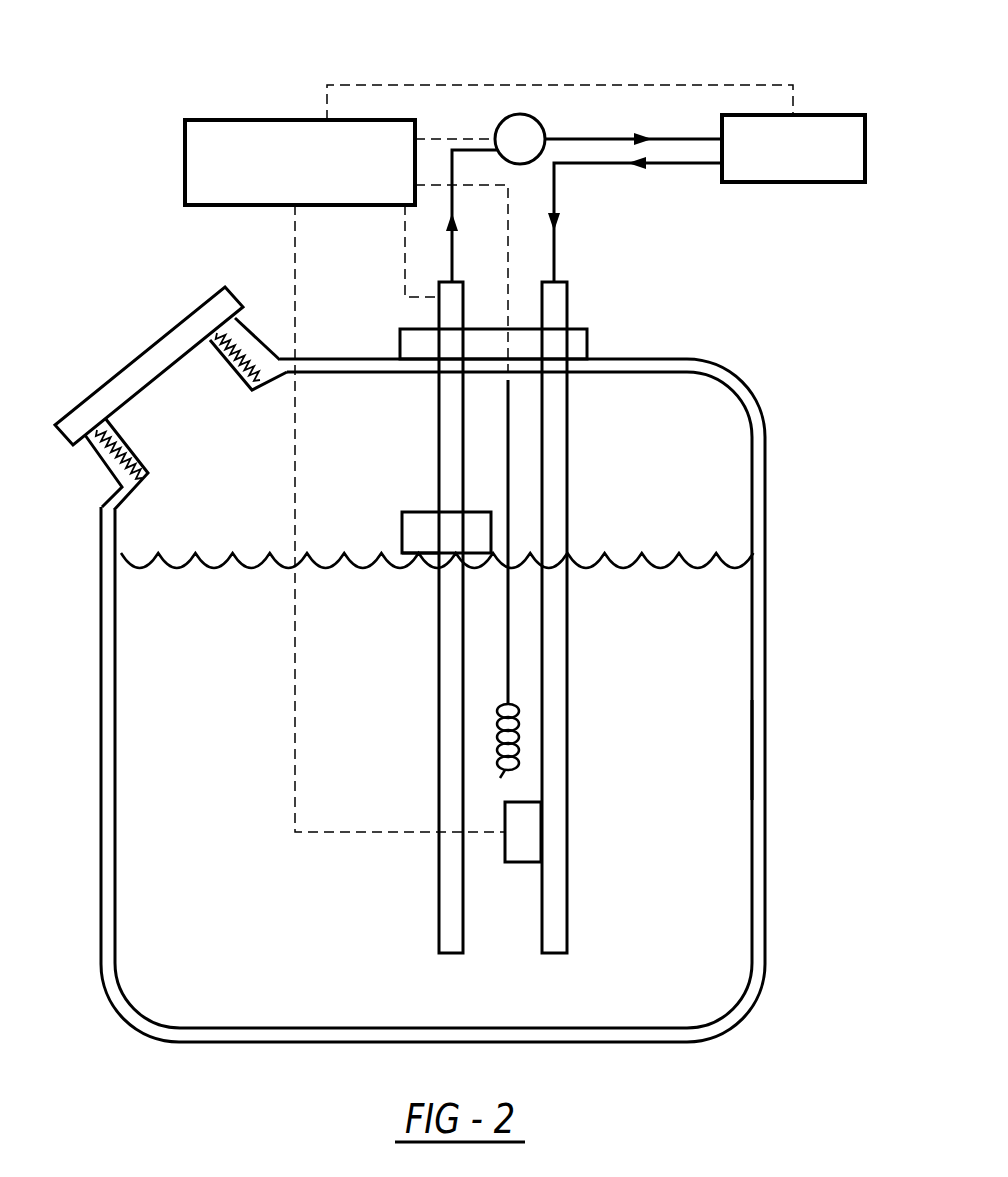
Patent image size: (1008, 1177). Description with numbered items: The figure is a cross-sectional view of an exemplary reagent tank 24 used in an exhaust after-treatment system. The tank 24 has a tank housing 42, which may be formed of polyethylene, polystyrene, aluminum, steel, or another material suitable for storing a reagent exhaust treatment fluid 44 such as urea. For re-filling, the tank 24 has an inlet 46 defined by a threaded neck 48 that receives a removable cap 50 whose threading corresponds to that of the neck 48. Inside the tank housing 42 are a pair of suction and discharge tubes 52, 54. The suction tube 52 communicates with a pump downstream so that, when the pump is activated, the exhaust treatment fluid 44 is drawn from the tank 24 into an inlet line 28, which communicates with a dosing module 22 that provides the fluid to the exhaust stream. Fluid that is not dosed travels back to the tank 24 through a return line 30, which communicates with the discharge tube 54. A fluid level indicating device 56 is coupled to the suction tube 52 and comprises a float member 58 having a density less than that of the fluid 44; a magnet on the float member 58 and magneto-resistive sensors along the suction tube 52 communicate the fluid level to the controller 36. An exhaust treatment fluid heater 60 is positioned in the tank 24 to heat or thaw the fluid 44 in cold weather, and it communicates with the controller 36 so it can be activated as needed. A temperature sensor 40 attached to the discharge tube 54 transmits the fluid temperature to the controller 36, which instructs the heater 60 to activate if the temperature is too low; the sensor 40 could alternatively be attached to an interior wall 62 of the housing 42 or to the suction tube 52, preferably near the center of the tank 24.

The dosing module 22 is at (793, 182).
The reagent tank 24 is at (772, 818).
The inlet line 28 is at (597, 139).
The return line 30 is at (648, 163).
The controller 36 is at (185, 163).
The temperature sensor 40 is at (520, 863).
The tank housing 42 is at (760, 438).
The exhaust treatment fluid 44 is at (197, 816).
The inlet 46 is at (150, 456).
The threaded neck 48 is at (112, 425).
The removable cap 50 is at (152, 342).
The suction tube 52 is at (438, 737).
The discharge tube 54 is at (567, 650).
The fluid level indicating device 56 is at (402, 528).
The float member 58 is at (423, 538).
The exhaust treatment fluid heater 60 is at (520, 736).
The interior wall 62 is at (751, 768).